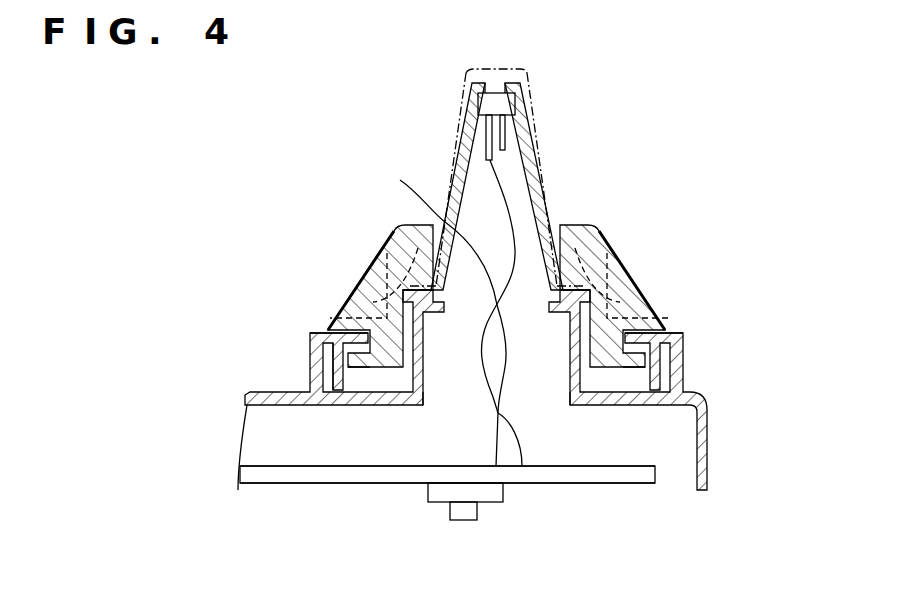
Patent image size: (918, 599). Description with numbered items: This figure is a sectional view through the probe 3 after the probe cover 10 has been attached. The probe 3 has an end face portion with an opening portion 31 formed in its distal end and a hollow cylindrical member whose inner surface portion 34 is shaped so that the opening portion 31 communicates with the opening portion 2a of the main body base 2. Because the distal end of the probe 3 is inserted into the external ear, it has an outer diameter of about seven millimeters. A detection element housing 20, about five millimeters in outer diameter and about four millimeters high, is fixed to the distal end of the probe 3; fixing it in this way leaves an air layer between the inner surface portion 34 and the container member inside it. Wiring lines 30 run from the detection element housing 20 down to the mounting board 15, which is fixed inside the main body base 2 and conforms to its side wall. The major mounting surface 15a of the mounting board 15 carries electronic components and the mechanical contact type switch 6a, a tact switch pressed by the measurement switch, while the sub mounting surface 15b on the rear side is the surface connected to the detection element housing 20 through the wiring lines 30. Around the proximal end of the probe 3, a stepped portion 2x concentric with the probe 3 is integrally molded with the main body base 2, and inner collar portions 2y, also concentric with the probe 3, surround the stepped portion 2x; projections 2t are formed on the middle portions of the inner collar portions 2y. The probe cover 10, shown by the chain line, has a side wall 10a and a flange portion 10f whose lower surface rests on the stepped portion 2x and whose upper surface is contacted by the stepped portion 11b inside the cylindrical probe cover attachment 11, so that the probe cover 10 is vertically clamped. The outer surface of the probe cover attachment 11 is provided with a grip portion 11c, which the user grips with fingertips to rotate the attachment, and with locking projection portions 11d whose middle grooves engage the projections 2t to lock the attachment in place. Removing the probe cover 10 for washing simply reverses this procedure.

The main body base 2 is at (710, 430).
The opening portion 2a is at (443, 408).
The projections 2t is at (676, 366).
The stepped portion 2x is at (410, 287).
The inner collar portions 2y is at (355, 337).
The probe 3 is at (540, 182).
The mechanical contact type switch 6a is at (487, 499).
The probe cover 10 is at (458, 108).
The side wall of cap 10a is at (452, 150).
The flange portion 10f is at (562, 250).
The probe cover attachment 11 is at (597, 263).
The stepped portion 11b is at (608, 290).
The grip portion 11c is at (378, 270).
The locking projection portions 11d is at (356, 370).
The mounting board 15 is at (413, 485).
The major mounting surface 15a is at (597, 485).
The sub mounting surface 15b is at (566, 465).
The detection element housing 20 is at (494, 103).
The wiring lines 30 is at (493, 192).
The opening portion 31 is at (500, 88).
The inner surface portion 34 is at (514, 137).